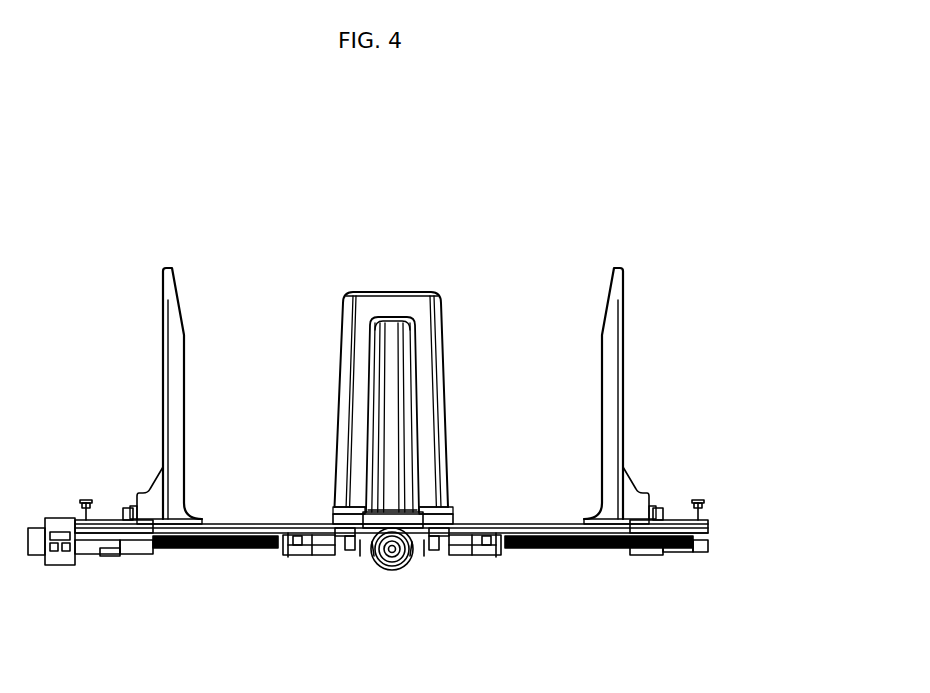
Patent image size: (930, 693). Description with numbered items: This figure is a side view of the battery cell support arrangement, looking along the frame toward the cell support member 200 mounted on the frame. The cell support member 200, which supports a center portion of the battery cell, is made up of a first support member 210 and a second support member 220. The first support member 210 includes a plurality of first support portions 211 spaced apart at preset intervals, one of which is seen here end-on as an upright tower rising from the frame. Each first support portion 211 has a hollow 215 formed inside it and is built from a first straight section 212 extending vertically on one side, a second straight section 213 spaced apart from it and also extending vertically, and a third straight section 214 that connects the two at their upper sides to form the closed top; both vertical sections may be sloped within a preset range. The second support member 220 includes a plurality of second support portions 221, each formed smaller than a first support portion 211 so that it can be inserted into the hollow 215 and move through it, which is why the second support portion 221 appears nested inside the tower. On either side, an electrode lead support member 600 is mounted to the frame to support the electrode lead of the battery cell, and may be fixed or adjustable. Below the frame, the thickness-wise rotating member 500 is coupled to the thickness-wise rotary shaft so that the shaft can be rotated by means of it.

The cell support member 200 is at (368, 351).
The first support member 210 is at (391, 325).
The first support portion 211 is at (391, 354).
The first straight section 212 is at (347, 330).
The second straight section 213 is at (439, 329).
The third straight section 214 is at (400, 300).
The hollow 215 is at (375, 322).
The second support member 220 is at (327, 322).
The second support portion 221 is at (390, 372).
The thickness-wise rotating member 500 is at (381, 580).
The electrode lead support member 600 is at (165, 267).